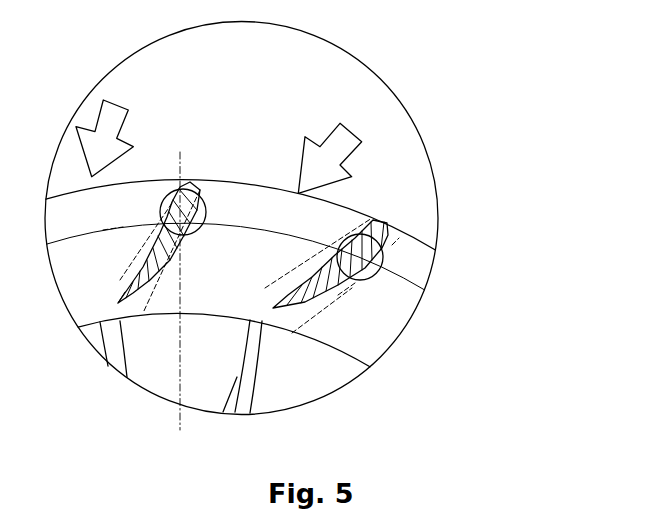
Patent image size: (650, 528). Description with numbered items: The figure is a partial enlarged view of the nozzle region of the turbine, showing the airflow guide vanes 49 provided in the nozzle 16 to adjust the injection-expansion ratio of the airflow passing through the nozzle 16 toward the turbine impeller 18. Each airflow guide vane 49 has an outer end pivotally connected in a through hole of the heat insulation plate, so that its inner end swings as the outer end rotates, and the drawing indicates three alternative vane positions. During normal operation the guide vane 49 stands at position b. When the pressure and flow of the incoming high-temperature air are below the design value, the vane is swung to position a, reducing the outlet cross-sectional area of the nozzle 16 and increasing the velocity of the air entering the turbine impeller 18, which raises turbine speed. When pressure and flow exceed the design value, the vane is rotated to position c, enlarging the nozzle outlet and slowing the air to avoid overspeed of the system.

The airflow guide vane 49 is at (378, 222).
The nozzle 16 is at (390, 288).
The turbine impeller 18 is at (283, 382).
The position a is at (110, 288).
The position b is at (138, 259).
The position c is at (165, 295).